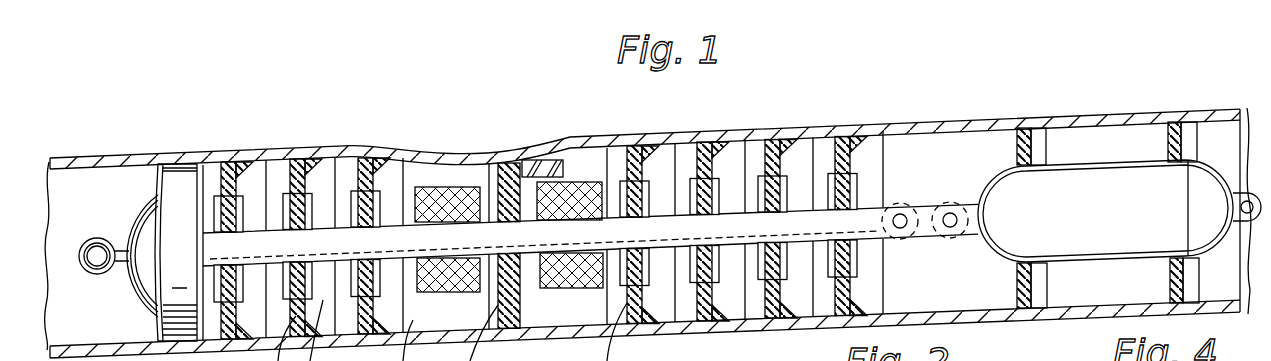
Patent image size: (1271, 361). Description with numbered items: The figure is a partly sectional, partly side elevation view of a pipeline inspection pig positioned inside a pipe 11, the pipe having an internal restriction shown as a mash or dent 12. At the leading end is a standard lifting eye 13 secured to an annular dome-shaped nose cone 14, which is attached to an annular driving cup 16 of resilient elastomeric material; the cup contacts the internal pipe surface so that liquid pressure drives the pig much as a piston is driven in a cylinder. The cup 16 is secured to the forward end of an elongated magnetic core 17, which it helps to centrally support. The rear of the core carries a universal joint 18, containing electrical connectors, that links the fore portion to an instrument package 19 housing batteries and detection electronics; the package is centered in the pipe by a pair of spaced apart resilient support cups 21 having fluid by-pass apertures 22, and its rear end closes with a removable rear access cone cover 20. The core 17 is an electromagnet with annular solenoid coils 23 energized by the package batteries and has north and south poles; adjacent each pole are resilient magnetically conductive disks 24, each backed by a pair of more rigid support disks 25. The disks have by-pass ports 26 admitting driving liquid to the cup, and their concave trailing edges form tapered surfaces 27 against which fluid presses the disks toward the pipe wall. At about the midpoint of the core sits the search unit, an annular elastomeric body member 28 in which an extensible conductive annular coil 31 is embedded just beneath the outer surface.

The pipe 11 is at (126, 157).
The mash or dent 12 is at (495, 150).
The lifting eye 13 is at (85, 250).
The nose cone 14 is at (133, 222).
The driving cup 16 is at (181, 163).
The magnetic core 17 is at (200, 250).
The universal joint 18 is at (921, 238).
The instrument package 19 is at (1089, 209).
The rear access cone cover 20 is at (1222, 170).
The support cups 21 is at (1026, 127).
The fluid by-pass apertures 22 is at (1168, 152).
The solenoid coils 23 is at (450, 187).
The magnetically conductive disks 24 is at (230, 160).
The support disks 25 is at (274, 198).
The by-pass ports 26 is at (910, 172).
The tapered surfaces 27 is at (322, 167).
The body member 28 is at (498, 293).
The annular coil 31 is at (537, 160).